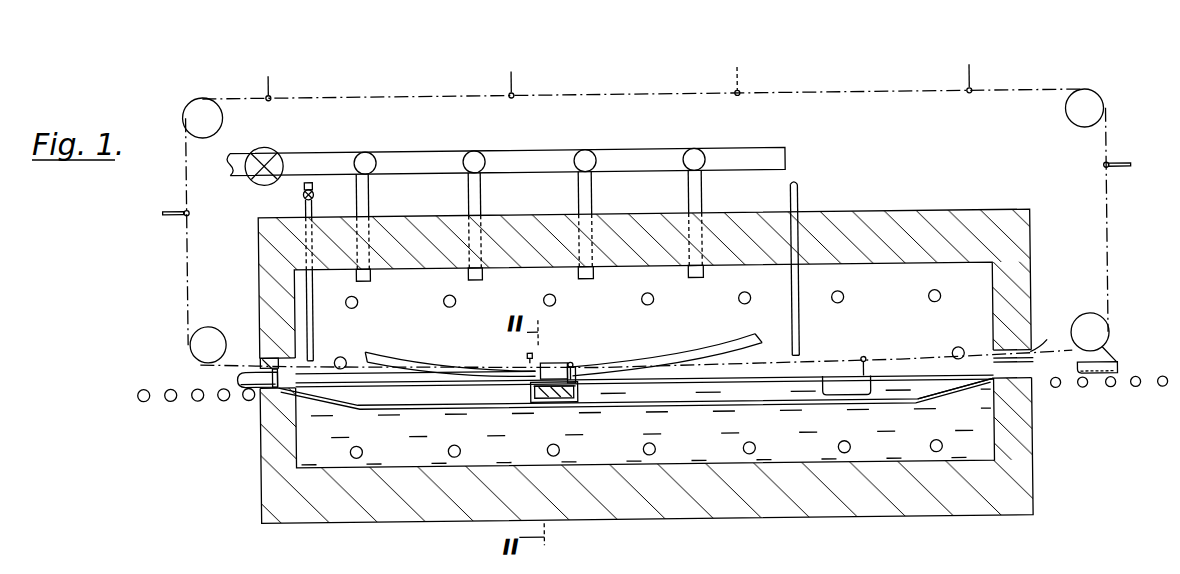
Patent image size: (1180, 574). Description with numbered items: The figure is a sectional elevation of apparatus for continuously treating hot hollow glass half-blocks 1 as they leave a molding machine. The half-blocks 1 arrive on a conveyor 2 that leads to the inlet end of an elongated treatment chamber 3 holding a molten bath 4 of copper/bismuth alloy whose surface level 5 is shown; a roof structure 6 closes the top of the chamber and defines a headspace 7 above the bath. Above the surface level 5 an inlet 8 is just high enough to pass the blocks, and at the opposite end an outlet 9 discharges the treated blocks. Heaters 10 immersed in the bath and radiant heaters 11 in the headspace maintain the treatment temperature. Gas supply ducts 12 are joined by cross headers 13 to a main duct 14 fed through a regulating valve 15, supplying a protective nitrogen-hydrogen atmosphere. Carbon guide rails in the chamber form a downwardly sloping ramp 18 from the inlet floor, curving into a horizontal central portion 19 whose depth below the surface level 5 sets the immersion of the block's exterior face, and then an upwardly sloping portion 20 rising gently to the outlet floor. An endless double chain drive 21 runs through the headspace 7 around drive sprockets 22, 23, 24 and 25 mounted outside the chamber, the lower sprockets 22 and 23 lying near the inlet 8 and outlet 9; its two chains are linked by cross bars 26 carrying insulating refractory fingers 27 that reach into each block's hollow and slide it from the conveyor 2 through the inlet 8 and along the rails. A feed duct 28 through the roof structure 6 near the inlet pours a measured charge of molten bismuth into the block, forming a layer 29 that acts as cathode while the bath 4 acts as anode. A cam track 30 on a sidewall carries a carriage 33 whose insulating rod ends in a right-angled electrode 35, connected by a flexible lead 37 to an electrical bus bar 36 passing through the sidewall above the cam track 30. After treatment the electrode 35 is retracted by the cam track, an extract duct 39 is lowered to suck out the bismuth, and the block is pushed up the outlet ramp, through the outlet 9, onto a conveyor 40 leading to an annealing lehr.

The half-block 1 is at (237, 374).
The conveyor 2 is at (218, 394).
The treatment chamber 3 is at (322, 503).
The molten bath 4 is at (412, 454).
The surface level 5 is at (403, 397).
The roof structure 6 is at (620, 226).
The headspace 7 is at (644, 365).
The inlet 8 is at (268, 356).
The outlet 9 is at (1046, 332).
The heaters 10 is at (641, 450).
The radiant heaters 11 is at (359, 299).
The gas supply ducts 12 is at (370, 192).
The cross headers 13 is at (476, 150).
The main duct 14 is at (395, 153).
The regulating valve 15 is at (276, 156).
The downwardly sloping ramp 18 is at (297, 396).
The horizontal central portion 19 is at (531, 399).
The upwardly sloping portion 20 is at (990, 382).
The endless double chain drive 21 is at (806, 94).
The drive sprocket 22 is at (195, 340).
The drive sprocket 23 is at (1098, 337).
The drive sprocket 24 is at (1094, 117).
The drive sprocket 25 is at (199, 101).
The cross bars 26 is at (200, 200).
The fingers 27 is at (184, 207).
The feed duct 28 is at (314, 336).
The layer of molten bismuth 29 is at (565, 399).
The cam track 30 is at (397, 357).
The carriage 33 is at (552, 363).
The right-angled electrode 35 is at (533, 382).
The electrical bus bar 36 is at (527, 352).
The flexible lead 37 is at (541, 361).
The extract duct 39 is at (800, 202).
The conveyor 40 is at (1138, 392).